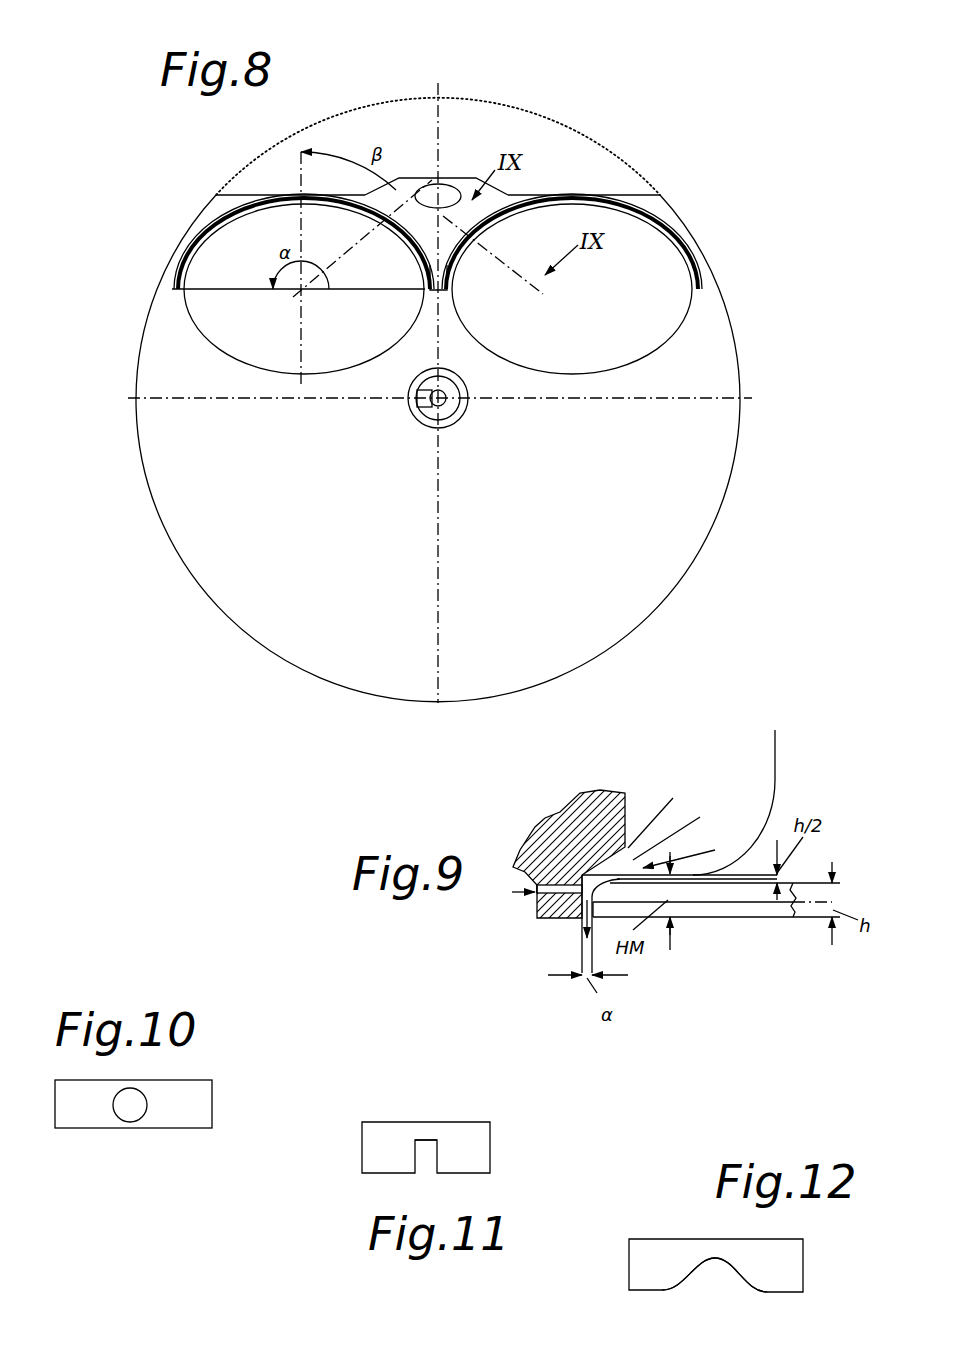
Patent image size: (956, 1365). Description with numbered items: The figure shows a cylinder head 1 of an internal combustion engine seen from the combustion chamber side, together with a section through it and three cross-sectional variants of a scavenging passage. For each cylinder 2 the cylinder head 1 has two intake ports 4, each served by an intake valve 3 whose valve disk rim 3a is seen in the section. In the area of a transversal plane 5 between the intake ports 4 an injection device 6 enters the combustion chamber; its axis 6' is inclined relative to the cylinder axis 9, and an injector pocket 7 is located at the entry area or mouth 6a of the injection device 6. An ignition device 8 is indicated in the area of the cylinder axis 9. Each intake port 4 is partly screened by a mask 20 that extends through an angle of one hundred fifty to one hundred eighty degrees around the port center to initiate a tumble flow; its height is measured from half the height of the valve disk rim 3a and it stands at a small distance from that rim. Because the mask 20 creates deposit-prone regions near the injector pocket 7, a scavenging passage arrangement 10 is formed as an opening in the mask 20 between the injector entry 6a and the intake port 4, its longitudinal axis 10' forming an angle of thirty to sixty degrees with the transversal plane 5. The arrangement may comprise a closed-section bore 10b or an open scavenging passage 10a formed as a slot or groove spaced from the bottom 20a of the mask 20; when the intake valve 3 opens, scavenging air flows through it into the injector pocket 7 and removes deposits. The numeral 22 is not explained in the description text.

In FIG. 8, the cylinder head 1 is at (150, 286).
In FIG. 8, the cylinder 2 is at (685, 218).
In FIG. 9, the intake valve 3 is at (777, 822).
In FIG. 9, the valve disk rim 3a is at (722, 917).
In FIG. 8, the intake port 4 is at (623, 365).
In FIG. 8, the transversal plane 5 is at (301, 337).
In FIG. 8, the injection device 6 is at (488, 106).
In FIG. 8, the axis of the injection device 6' is at (479, 65).
In FIG. 8, the entry area or mouth of the injection device 6a is at (448, 192).
In FIG. 8, the injector pocket 7 is at (448, 242).
In FIG. 8, the ignition device 8 is at (467, 405).
In FIG. 8, the cylinder axis 9 is at (467, 410).
In FIG. 8, the scavenging passage arrangement 10 is at (538, 115).
In FIG. 9, the scavenging passage arrangement 10 is at (520, 847).
In FIG. 10, the scavenging passage arrangement 10 is at (84, 1168).
In FIG. 11, the scavenging passage arrangement 10 is at (445, 1102).
In FIG. 12, the scavenging passage arrangement 10 is at (657, 1217).
In FIG. 8, the longitudinal axis of the scavenging passage arrangement 10' is at (208, 202).
In FIG. 11, the open scavenging passage 10a is at (430, 1155).
In FIG. 12, the open scavenging passage 10a is at (702, 1260).
In FIG. 9, the bore 10b is at (537, 897).
In FIG. 10, the bore 10b is at (130, 1110).
In FIG. 8, the mask 20 is at (707, 262).
In FIG. 9, the mask 20 is at (555, 912).
In FIG. 10, the mask 20 is at (190, 1118).
In FIG. 11, the mask 20 is at (387, 1138).
In FIG. 12, the mask 20 is at (648, 1275).
In FIG. 9, the bottom of the mask 20a is at (583, 873).
In FIG. 8, the cylinder bore 22 is at (170, 475).